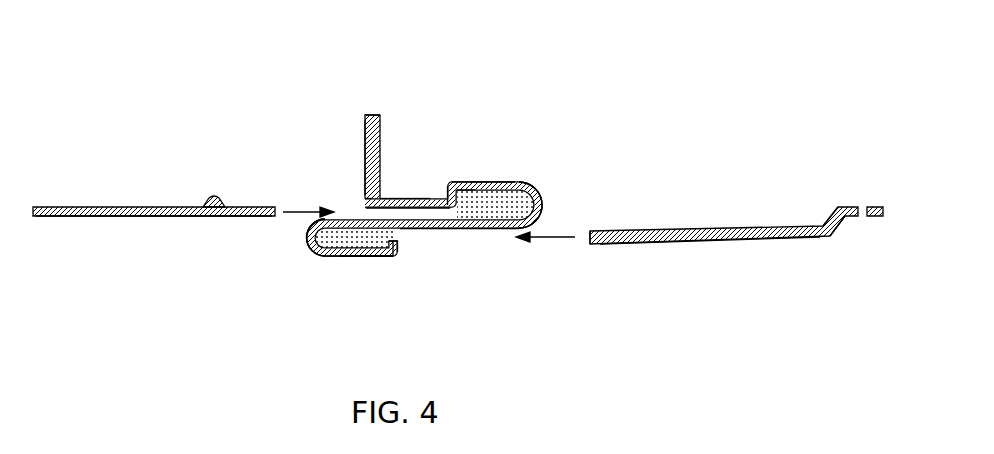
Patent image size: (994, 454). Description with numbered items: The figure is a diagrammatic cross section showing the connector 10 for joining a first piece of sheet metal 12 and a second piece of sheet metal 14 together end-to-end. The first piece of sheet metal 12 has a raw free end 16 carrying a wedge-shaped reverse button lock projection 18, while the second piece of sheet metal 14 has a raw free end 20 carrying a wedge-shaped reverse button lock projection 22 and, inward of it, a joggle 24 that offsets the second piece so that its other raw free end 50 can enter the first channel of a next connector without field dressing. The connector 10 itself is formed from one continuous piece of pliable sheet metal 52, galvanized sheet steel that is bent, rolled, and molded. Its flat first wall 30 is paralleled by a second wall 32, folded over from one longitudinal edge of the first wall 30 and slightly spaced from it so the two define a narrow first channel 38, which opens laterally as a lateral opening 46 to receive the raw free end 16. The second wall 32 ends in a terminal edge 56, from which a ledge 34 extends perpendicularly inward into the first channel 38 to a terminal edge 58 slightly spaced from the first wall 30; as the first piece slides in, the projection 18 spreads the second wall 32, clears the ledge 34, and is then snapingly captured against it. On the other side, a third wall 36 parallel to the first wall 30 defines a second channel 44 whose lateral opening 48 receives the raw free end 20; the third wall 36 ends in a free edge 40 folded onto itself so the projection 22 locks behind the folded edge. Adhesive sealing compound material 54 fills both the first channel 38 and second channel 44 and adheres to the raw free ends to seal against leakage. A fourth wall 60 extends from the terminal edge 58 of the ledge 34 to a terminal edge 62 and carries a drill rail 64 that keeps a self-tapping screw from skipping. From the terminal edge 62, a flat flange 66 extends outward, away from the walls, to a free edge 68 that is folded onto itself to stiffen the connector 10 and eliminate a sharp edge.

The connector 10 is at (279, 43).
The first piece of sheet metal 12 is at (103, 201).
The second piece of sheet metal 14 is at (846, 195).
The raw free end 16 is at (250, 218).
The wedge-shaped reverse button lock projection 18 is at (206, 190).
The raw free end 20 is at (602, 231).
The wedge-shaped reverse button lock projection 22 is at (640, 246).
The joggle 24 is at (833, 231).
The first wall 30 is at (438, 230).
The second wall 32 is at (487, 185).
The ledge 34 is at (448, 195).
The third wall 36 is at (347, 257).
The first channel 38 is at (507, 195).
The free edge 40 is at (393, 258).
The second channel 44 is at (313, 253).
The lateral opening 46 is at (371, 215).
The lateral opening 48 is at (397, 234).
The other raw free end 50 is at (873, 206).
The one continuous piece of pliable sheet metal 52 is at (500, 231).
The adhesive sealing compound material 54 is at (425, 219).
The terminal edge 56 is at (452, 188).
The terminal edge 58 is at (463, 187).
The fourth wall 60 is at (393, 198).
The terminal edge 62 is at (364, 199).
The drill rail 64 is at (413, 198).
The flange 66 is at (365, 170).
The free edge 68 is at (362, 124).